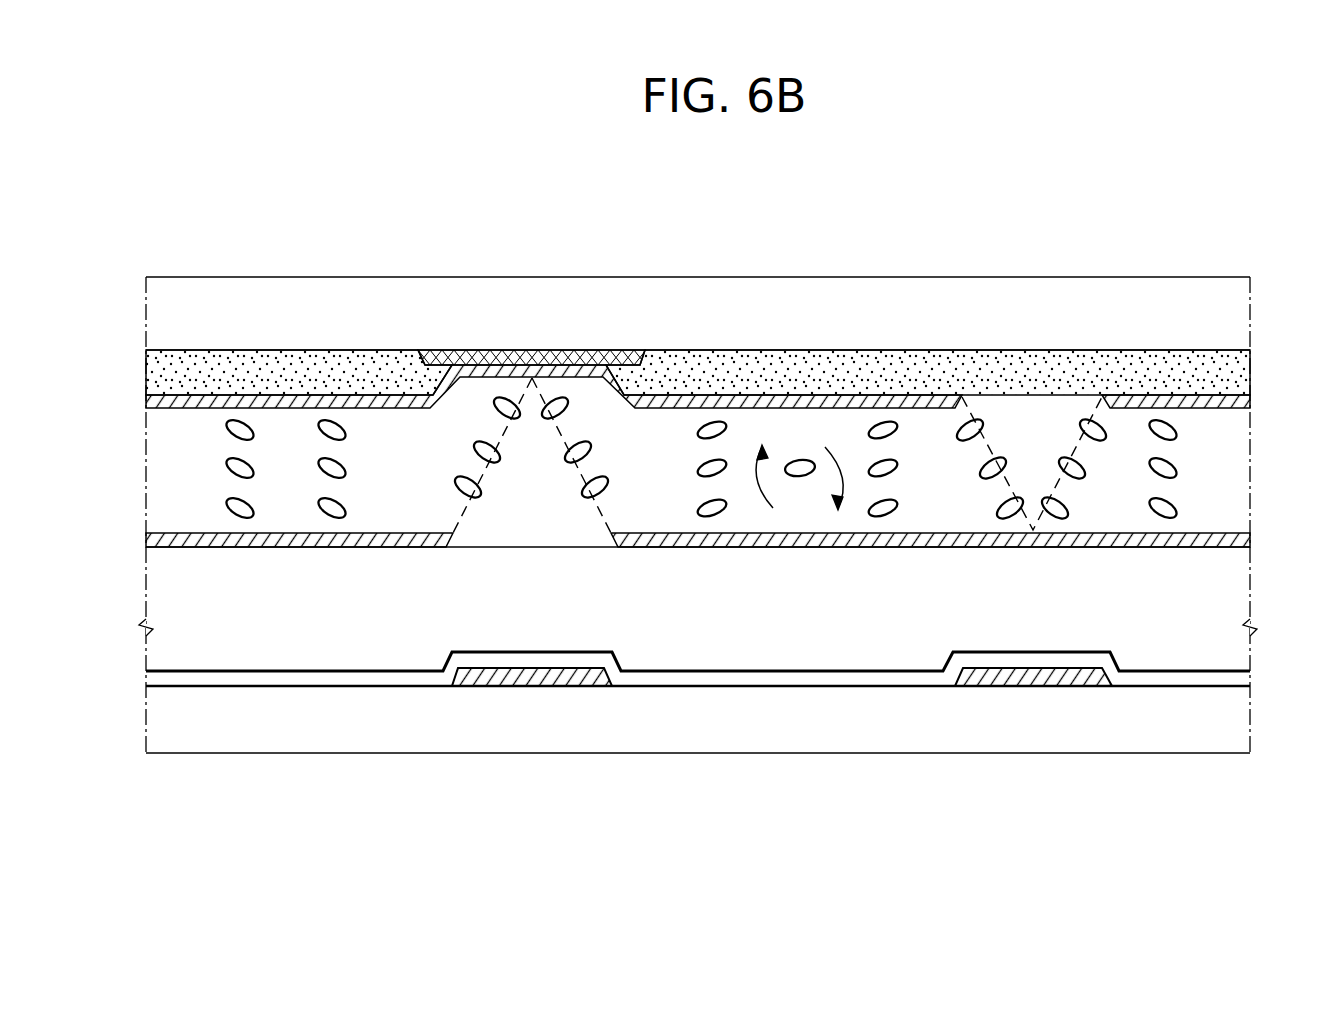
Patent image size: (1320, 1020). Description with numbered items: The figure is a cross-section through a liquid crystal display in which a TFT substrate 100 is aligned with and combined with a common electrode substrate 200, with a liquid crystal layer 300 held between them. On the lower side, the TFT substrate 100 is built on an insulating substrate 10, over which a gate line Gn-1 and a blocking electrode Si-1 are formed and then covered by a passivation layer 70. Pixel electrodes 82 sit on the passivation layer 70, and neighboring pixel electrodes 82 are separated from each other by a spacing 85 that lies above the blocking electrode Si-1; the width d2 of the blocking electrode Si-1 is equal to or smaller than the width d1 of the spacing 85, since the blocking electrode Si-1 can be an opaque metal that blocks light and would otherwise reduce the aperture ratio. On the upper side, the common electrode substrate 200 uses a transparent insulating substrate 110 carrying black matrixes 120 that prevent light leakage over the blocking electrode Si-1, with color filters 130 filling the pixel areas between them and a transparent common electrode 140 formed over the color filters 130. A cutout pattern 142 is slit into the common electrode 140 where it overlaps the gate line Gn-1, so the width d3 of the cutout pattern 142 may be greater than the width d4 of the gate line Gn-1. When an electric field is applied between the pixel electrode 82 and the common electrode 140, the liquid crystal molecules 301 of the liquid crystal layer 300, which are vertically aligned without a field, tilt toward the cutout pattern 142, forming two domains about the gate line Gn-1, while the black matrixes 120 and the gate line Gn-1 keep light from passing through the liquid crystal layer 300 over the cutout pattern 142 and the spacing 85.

The TFT substrate 100 is at (1256, 549).
The insulating substrate 10 is at (713, 687).
The passivation layer 70 is at (817, 608).
The pixel electrode 82 is at (880, 548).
The spacing 85 is at (503, 534).
The blocking electrode Si-1 is at (557, 687).
The gate line Gn-1 is at (1037, 687).
The common electrode substrate 200 is at (1256, 279).
The insulating substrate 110 is at (339, 310).
The black matrix 120 is at (519, 365).
The color filter 130 is at (680, 372).
The common electrode 140 is at (787, 393).
The cutout pattern 142 is at (1027, 405).
The liquid crystal layer 300 is at (1256, 409).
The liquid crystal molecule 301 is at (895, 506).
The width of the spacing d1 is at (660, 503).
The width of the blocking electrode d2 is at (657, 638).
The width of the cutout pattern d3 is at (1162, 260).
The width of the gate line d4 is at (1160, 638).